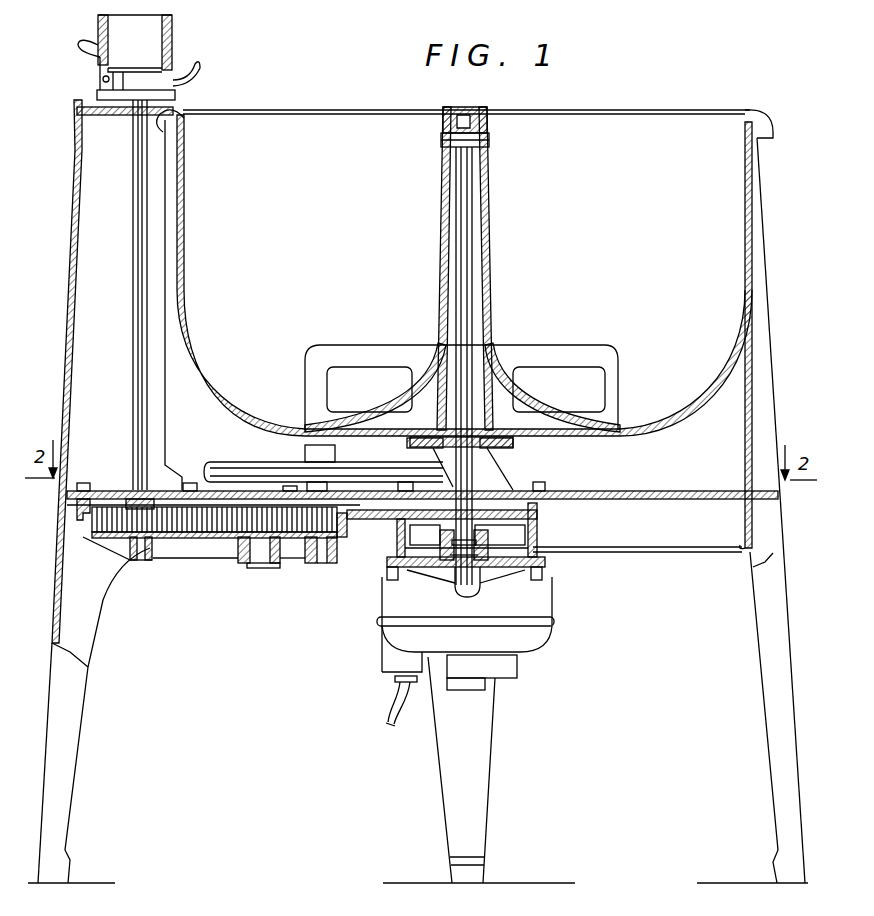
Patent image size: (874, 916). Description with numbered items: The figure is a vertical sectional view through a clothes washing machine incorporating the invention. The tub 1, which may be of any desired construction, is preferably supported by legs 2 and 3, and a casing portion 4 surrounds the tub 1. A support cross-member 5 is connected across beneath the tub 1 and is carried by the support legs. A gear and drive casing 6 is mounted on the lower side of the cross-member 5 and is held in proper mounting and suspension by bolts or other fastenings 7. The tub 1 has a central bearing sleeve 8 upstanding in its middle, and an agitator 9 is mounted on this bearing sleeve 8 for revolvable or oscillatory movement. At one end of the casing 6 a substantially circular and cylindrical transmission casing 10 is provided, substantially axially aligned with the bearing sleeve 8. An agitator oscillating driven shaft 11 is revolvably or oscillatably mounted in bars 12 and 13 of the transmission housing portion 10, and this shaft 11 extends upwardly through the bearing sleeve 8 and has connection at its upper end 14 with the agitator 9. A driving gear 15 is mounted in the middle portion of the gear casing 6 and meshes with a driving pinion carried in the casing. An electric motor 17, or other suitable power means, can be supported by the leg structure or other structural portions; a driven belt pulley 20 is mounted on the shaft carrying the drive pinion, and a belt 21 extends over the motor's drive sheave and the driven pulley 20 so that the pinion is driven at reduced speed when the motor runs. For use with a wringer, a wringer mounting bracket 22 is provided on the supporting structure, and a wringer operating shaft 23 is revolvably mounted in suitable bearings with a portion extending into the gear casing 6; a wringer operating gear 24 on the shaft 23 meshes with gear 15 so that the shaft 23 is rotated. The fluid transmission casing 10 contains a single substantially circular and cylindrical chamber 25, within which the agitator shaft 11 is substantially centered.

The tub 1 is at (744, 260).
The leg 2 is at (82, 373).
The leg 3 is at (763, 362).
The casing portion 4 is at (753, 417).
The support cross-member 5 is at (637, 497).
The gear and drive casing 6 is at (298, 542).
The bolts or other fastenings 7 is at (540, 486).
The central bearing sleeve 8 is at (487, 285).
The agitator 9 is at (553, 355).
The transmission casing 10 is at (541, 538).
The agitator oscillating driven shaft 11 is at (465, 316).
The bar 12 is at (473, 496).
The bar 13 is at (455, 580).
The upper end 14 is at (488, 138).
The driving gear 15 is at (237, 538).
The electric motor 17 is at (543, 612).
The driven belt pulley 20 is at (247, 467).
The belt 21 is at (354, 467).
The wringer mounting bracket 22 is at (173, 50).
The wringer operating shaft 23 is at (135, 275).
The wringer operating gear 24 is at (163, 548).
The circular chamber 25 is at (527, 527).